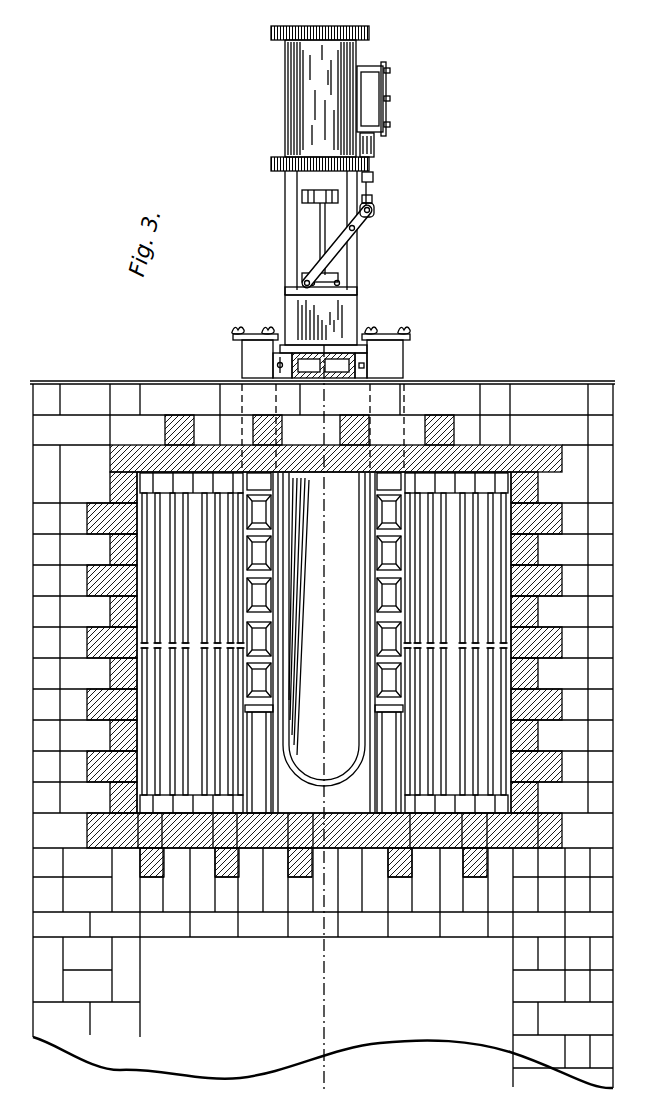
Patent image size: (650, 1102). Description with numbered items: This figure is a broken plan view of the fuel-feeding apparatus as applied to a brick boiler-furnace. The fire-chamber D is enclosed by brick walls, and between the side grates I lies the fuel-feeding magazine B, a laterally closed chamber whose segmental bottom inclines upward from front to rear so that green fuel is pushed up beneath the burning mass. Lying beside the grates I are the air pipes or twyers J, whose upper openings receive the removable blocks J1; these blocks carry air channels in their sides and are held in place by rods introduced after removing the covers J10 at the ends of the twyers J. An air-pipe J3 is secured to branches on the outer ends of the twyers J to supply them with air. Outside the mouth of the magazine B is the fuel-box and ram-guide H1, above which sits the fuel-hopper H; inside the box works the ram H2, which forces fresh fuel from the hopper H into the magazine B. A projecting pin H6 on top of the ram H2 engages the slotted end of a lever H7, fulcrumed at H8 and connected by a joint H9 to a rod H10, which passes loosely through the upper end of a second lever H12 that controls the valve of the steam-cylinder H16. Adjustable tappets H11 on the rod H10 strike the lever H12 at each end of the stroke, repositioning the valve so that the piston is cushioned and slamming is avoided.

The fire-chamber D is at (134, 583).
The side grates I is at (324, 643).
The air pipes or twyers J is at (378, 715).
The blocks J1 is at (256, 592).
The air-pipe J3 is at (330, 372).
The covers J10 is at (255, 337).
The fuel-feeding magazine B is at (324, 629).
The fuel-hopper H is at (323, 26).
The steam-cylinder H16 is at (290, 97).
The adjustable tappets H11 is at (386, 132).
The lever H12 is at (375, 150).
The rod H10 is at (374, 180).
The fuel-box and ram-guide H1 is at (292, 216).
The ram H2 is at (340, 312).
The projecting pin H6 is at (300, 281).
The lever H7 is at (345, 250).
The fulcrum H8 is at (374, 215).
The joint H9 is at (376, 205).